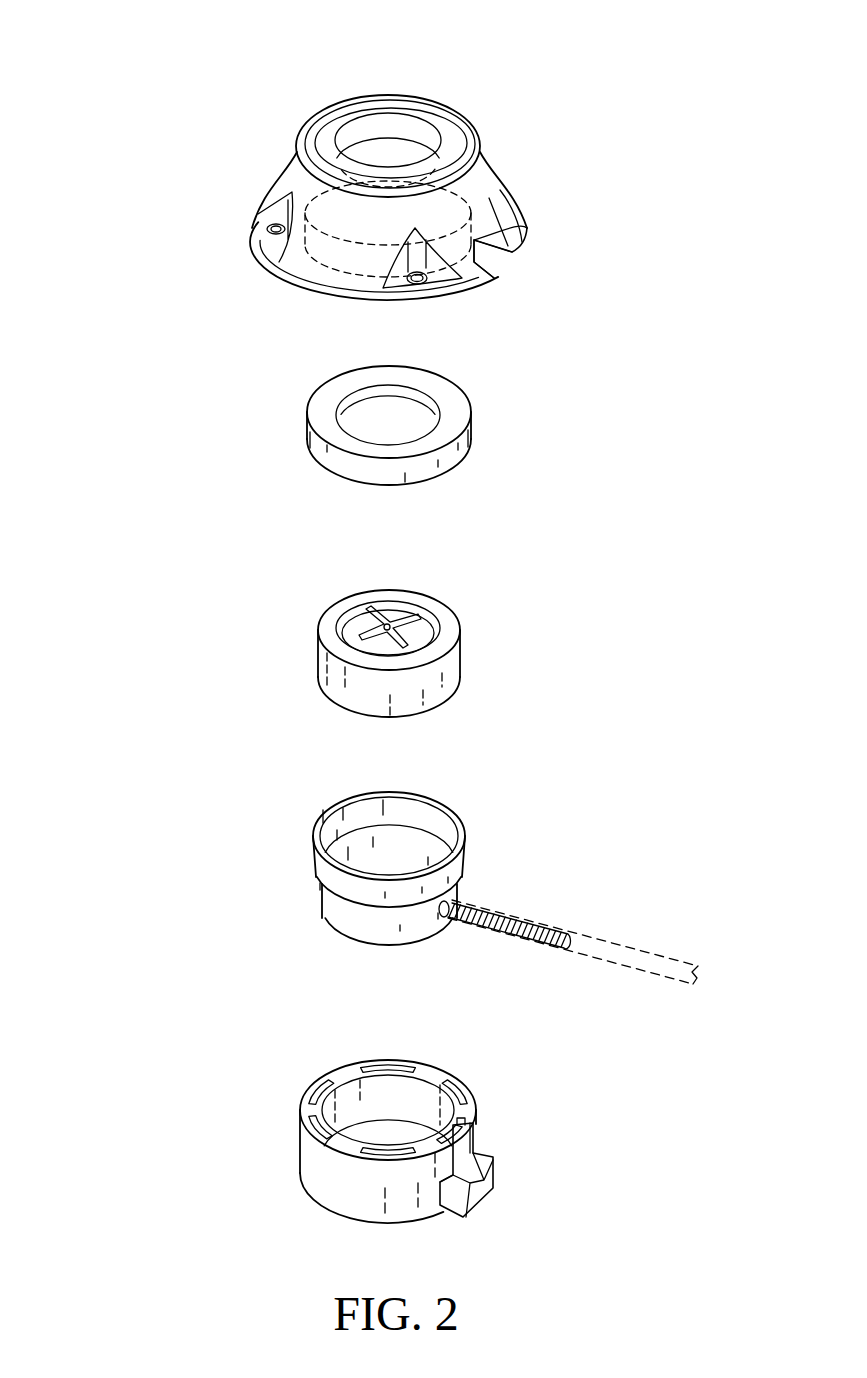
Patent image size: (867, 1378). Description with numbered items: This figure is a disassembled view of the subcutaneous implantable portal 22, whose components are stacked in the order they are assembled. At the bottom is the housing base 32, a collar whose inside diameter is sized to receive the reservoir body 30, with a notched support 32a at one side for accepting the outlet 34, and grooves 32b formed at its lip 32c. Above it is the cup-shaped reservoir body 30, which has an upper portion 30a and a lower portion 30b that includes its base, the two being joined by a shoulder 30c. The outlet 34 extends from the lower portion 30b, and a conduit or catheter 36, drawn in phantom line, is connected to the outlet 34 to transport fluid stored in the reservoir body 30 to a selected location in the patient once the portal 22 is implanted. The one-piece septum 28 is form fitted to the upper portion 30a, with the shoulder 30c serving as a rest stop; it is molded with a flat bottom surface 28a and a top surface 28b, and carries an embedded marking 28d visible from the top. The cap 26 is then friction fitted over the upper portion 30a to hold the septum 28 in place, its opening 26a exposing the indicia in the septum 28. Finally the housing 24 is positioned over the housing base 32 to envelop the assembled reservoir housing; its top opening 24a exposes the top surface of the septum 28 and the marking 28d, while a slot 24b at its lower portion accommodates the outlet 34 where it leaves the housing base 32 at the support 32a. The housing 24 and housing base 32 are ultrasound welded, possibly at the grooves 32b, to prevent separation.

The portal 22 is at (108, 72).
The housing 24 is at (531, 126).
The top opening 24a is at (415, 136).
The slot 24b is at (493, 258).
The cap 26 is at (500, 394).
The opening 26a is at (366, 410).
The septum 28 is at (490, 627).
The flat bottom surface 28a is at (338, 687).
The top surface 28b is at (340, 637).
The marking 28d is at (393, 610).
The reservoir body 30 is at (516, 809).
The upper portion 30a is at (320, 868).
The lower portion 30b is at (352, 922).
The shoulder 30c is at (423, 832).
The housing base 32 is at (515, 1078).
The notched support 32a is at (497, 1170).
The grooves 32b is at (315, 1132).
The lip 32c is at (352, 1075).
The outlet 34 is at (522, 927).
The catheter 36 is at (640, 948).